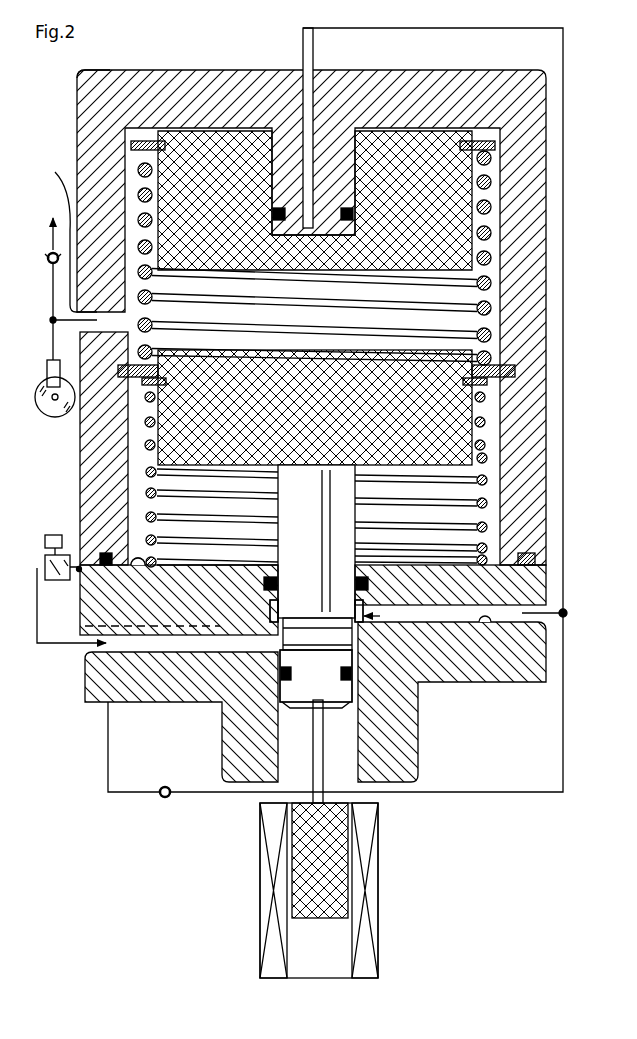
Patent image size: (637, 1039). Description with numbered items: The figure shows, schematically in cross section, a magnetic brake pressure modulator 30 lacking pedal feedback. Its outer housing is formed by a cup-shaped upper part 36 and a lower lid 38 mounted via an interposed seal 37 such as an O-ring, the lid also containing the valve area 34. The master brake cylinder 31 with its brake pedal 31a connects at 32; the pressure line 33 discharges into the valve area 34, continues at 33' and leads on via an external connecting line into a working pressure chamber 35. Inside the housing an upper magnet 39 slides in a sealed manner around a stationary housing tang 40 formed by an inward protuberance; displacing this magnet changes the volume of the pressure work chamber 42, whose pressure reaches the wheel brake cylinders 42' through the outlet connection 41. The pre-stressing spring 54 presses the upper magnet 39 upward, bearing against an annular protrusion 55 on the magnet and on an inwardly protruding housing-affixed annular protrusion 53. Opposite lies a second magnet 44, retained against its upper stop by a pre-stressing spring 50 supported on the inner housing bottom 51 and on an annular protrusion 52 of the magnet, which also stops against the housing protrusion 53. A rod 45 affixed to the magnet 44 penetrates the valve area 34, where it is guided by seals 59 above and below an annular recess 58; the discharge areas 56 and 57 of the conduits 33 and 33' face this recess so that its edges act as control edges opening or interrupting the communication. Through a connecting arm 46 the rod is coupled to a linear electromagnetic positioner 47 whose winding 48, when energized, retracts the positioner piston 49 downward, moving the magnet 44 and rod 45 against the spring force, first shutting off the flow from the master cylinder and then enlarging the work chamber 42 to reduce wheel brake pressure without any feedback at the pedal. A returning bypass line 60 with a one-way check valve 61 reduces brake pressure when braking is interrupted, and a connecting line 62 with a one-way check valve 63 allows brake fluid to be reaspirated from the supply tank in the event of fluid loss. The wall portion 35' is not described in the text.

The magnetic brake pressure modulator 30 is at (160, 68).
The working pressure chamber 35 is at (313, 83).
The housing wall portion 35' is at (65, 92).
The upper magnet 39 is at (370, 128).
The housing tang 40 is at (285, 128).
The annular protrusion 55 is at (481, 140).
The pre-stressing spring 54 is at (490, 232).
The pressure work chamber 42 is at (314, 306).
The second magnet 44 is at (478, 350).
The annular protrusion 53 is at (515, 372).
The annular protrusion 52 is at (490, 388).
The upper housing part 36 is at (90, 462).
The pre-stressing spring 50 is at (470, 482).
The rod 45 is at (312, 511).
The seals 59 is at (265, 588).
The annular recess 58 is at (358, 630).
The discharge area 57 is at (357, 642).
The lower lid 38 is at (418, 690).
The valve area 34 is at (563, 478).
The seal 37 is at (535, 560).
The inner housing bottom 51 is at (138, 572).
The discharge area 56 is at (272, 645).
The pressure line 33 is at (71, 654).
The master brake cylinder connection 32 is at (76, 658).
The pressure line continuation 33' is at (465, 662).
The returning bypass line 60 is at (563, 740).
The one-way check valve 61 is at (160, 797).
The master brake cylinder 31 is at (58, 585).
The brake pedal 31a is at (78, 566).
The outlet connection 41 is at (63, 234).
The one-way check valve 63 is at (50, 253).
The connecting line 62 is at (52, 302).
The wheel brake cylinder 42' is at (47, 373).
The connecting arm 46 is at (318, 748).
The linear positioner 47 is at (258, 925).
The positioner winding 48 is at (268, 892).
The positioner piston 49 is at (316, 842).